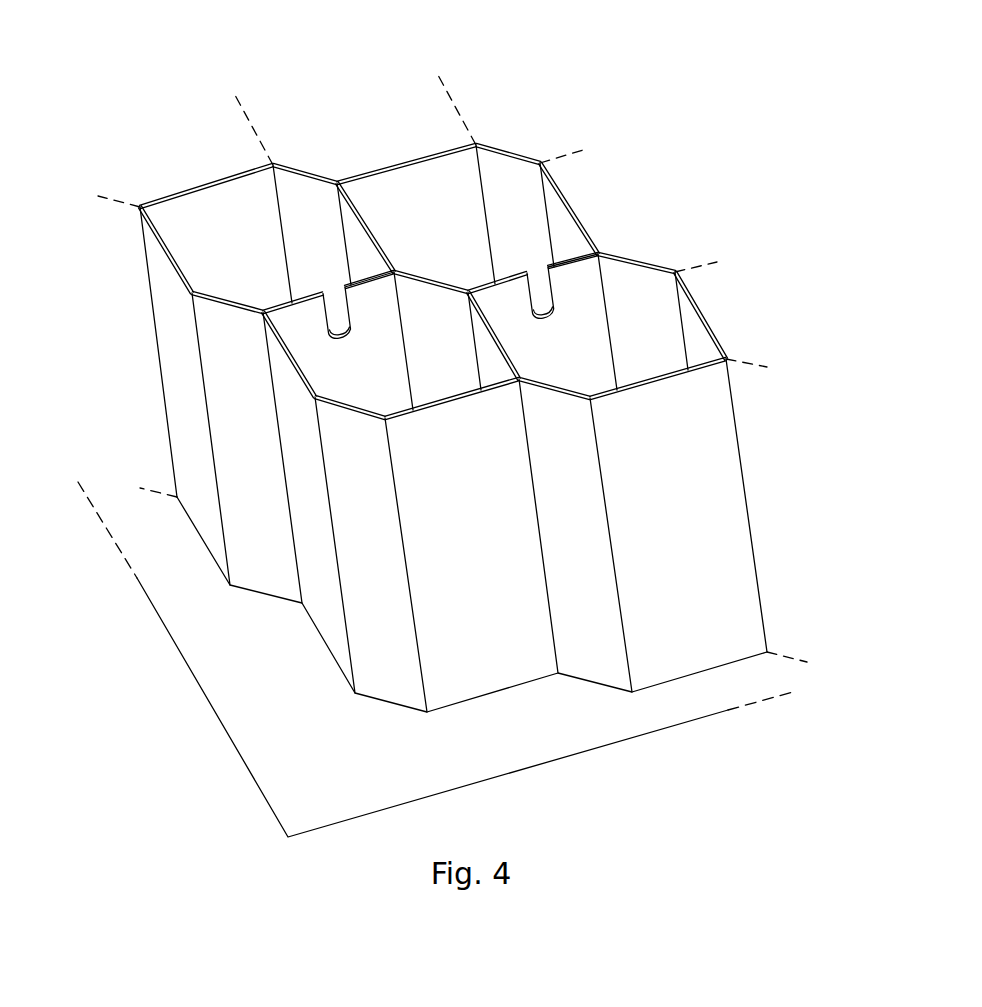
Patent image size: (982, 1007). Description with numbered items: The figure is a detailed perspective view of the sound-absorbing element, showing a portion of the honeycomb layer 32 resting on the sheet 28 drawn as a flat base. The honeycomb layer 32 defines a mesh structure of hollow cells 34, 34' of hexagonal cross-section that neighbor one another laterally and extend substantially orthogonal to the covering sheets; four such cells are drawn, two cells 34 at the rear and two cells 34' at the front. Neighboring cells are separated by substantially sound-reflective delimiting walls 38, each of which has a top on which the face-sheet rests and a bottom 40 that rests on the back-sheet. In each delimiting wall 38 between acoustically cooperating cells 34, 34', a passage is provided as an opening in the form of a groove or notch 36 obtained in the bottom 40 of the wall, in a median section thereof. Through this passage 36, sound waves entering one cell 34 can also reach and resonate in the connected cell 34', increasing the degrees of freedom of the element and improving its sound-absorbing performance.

The front layer (face-sheet) 28 is at (311, 779).
The honeycomb layer 32 is at (482, 88).
The hollow cell 34 is at (369, 228).
The acoustically cooperating cell 34' is at (495, 335).
The passage (opening, groove or notch) 36 is at (345, 307).
The delimiting wall 38 is at (402, 307).
The bottom of delimiting wall 40 is at (384, 292).